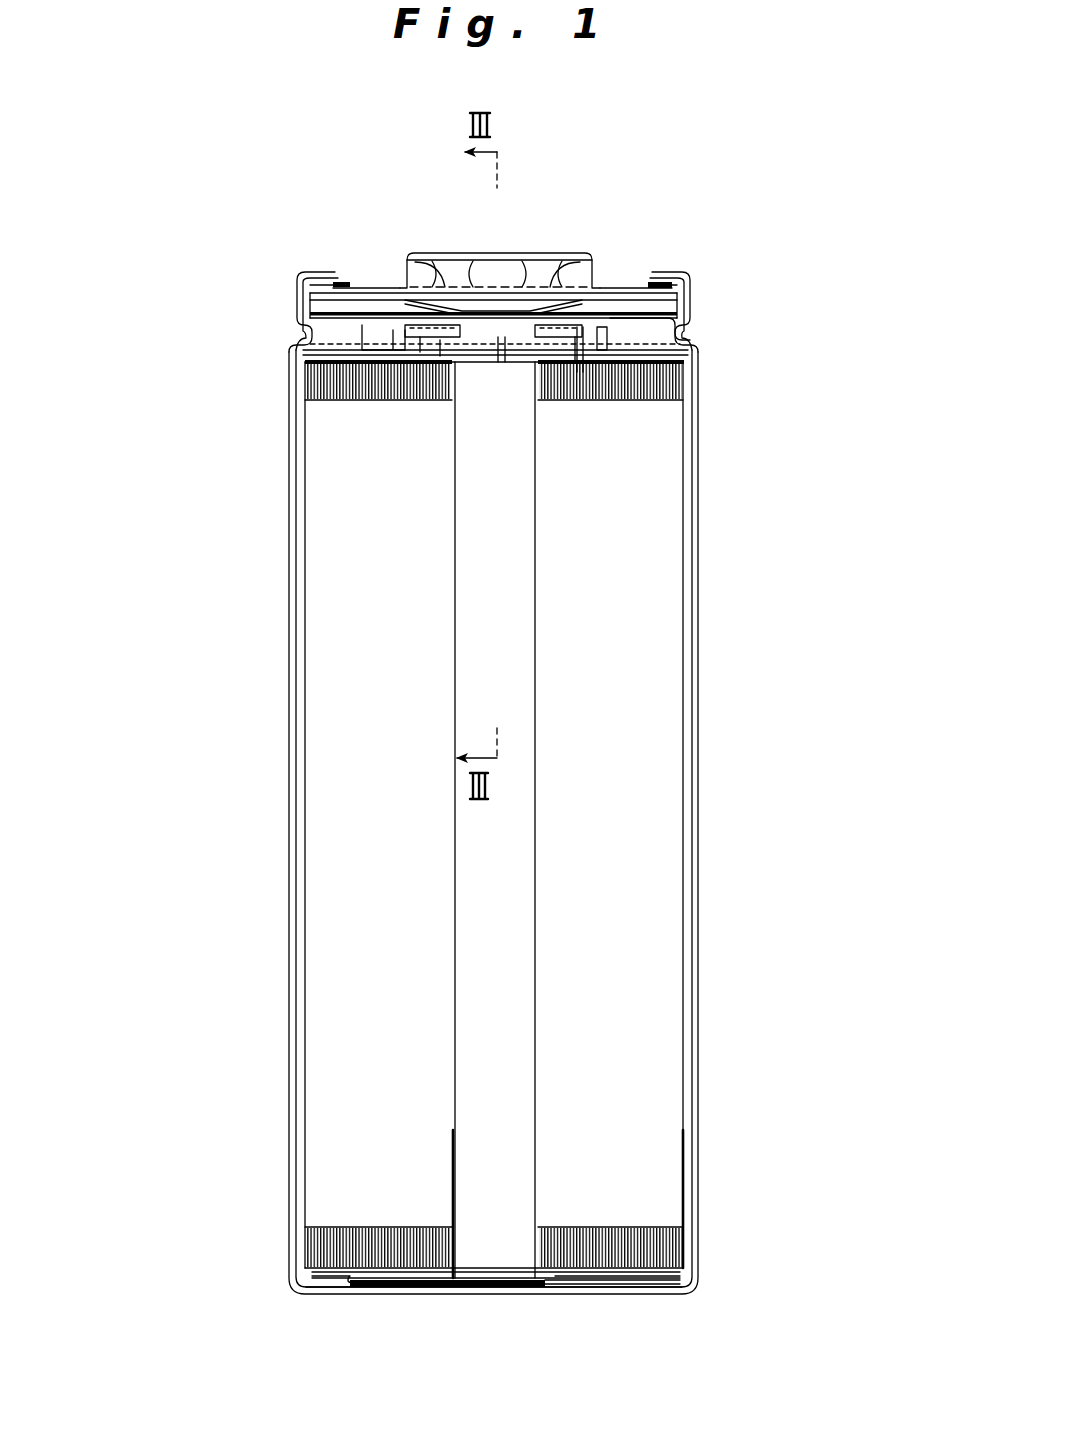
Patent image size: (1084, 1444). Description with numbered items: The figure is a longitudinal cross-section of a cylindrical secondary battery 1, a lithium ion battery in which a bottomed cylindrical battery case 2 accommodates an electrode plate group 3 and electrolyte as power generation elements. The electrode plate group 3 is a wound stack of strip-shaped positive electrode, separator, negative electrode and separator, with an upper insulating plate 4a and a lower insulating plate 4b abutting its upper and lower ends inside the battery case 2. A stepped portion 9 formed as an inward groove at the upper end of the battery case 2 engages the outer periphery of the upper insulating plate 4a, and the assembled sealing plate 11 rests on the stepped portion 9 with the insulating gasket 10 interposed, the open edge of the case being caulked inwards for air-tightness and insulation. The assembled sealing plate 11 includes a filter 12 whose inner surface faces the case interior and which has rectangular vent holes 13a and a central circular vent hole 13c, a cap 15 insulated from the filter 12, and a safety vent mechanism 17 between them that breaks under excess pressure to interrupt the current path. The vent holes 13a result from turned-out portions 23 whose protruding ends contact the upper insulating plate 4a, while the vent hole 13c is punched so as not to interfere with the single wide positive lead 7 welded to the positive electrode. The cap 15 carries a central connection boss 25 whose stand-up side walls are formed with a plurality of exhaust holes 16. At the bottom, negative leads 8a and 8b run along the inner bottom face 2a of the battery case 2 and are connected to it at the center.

The cylindrical secondary battery 1 is at (724, 500).
The battery case 2 is at (700, 742).
The inner bottom face 2a is at (560, 1288).
The electrode plate group 3 is at (616, 733).
The upper insulating plate 4a is at (652, 355).
The lower insulating plate 4b is at (662, 1279).
The positive lead 7 is at (440, 345).
The negative lead 8a is at (436, 1283).
The negative lead 8b is at (616, 1283).
The stepped portion 9 is at (310, 340).
The insulating gasket 10 is at (305, 300).
The assembled sealing plate 11 is at (614, 282).
The filter 12 is at (357, 327).
The vent holes 13a is at (585, 356).
The vent hole 13c is at (498, 362).
The cap 15 is at (384, 282).
The exhaust holes 16 is at (500, 268).
The safety vent mechanism 17 is at (478, 302).
The turned-out portions 23 is at (604, 346).
The connection boss 25 is at (440, 262).